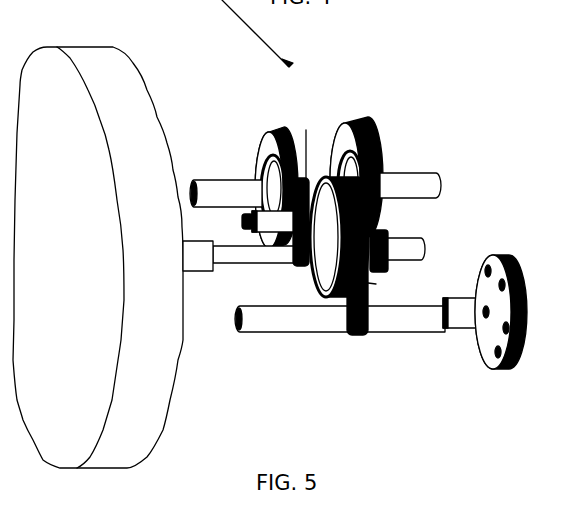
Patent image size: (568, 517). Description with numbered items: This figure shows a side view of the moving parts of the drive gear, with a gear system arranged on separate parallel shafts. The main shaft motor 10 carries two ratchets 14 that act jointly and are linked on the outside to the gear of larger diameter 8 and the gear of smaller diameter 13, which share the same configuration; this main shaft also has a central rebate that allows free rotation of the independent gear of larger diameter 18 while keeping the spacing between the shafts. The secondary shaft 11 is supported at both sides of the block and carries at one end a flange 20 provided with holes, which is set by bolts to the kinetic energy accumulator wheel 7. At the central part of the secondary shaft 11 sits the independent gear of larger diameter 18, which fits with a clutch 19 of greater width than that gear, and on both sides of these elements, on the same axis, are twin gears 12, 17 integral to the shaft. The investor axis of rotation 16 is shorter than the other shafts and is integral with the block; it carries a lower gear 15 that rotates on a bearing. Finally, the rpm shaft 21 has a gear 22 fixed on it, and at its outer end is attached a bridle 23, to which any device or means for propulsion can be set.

The kinetic energy accumulator wheel 7 is at (83, 47).
The gear of larger diameter 8 is at (358, 118).
The main shaft motor 10 is at (428, 173).
The secondary shaft 11 is at (424, 243).
The twin gear 12 is at (388, 234).
The gear of smaller diameter 13 is at (262, 132).
The ratchet 14 is at (258, 176).
The lower gear 15 is at (306, 130).
The investor axis of rotation 16 is at (241, 222).
The twin gear 17 is at (290, 266).
The independent gear of larger diameter 18 is at (366, 283).
The clutch 19 is at (318, 280).
The flange 20 is at (193, 266).
The rpm shaft 21 is at (243, 333).
The gear 22 is at (363, 340).
The bridle 23 is at (487, 367).